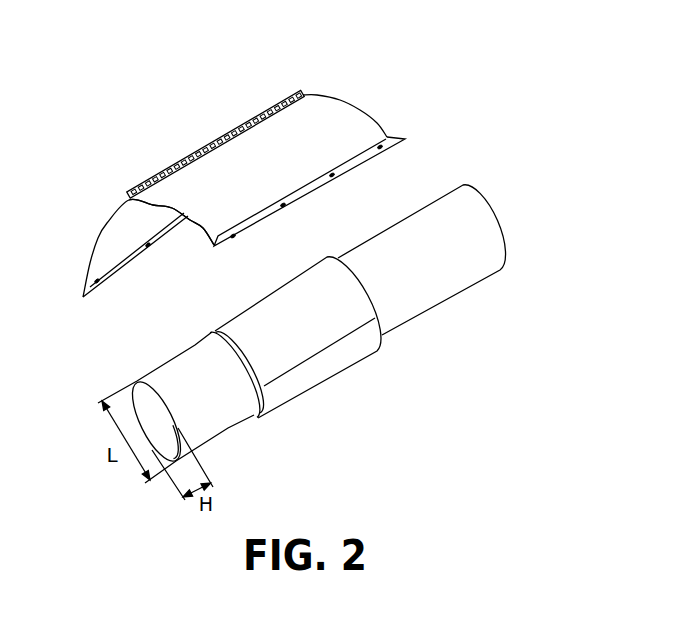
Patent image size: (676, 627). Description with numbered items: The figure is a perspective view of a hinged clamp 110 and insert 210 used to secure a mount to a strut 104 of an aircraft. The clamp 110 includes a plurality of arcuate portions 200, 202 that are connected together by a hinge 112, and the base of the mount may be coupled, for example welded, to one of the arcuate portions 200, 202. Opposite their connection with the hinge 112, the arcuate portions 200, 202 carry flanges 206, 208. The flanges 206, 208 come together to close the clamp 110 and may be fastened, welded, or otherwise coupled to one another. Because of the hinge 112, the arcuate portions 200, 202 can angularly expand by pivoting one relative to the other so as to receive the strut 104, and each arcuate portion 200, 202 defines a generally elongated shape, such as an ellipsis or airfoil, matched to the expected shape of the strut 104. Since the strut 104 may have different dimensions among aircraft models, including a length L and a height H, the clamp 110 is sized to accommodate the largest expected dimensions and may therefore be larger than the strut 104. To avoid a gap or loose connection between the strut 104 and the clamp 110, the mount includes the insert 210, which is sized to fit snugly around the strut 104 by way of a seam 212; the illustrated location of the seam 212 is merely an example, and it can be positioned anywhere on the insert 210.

The strut 104 is at (482, 228).
The clamp 110 is at (322, 105).
The hinge 112 is at (221, 140).
The arcuate portion 200 is at (358, 123).
The arcuate portion 202 is at (142, 215).
The flange 206 is at (366, 157).
The flange 208 is at (115, 279).
The insert 210 is at (360, 348).
The seam 212 is at (315, 350).